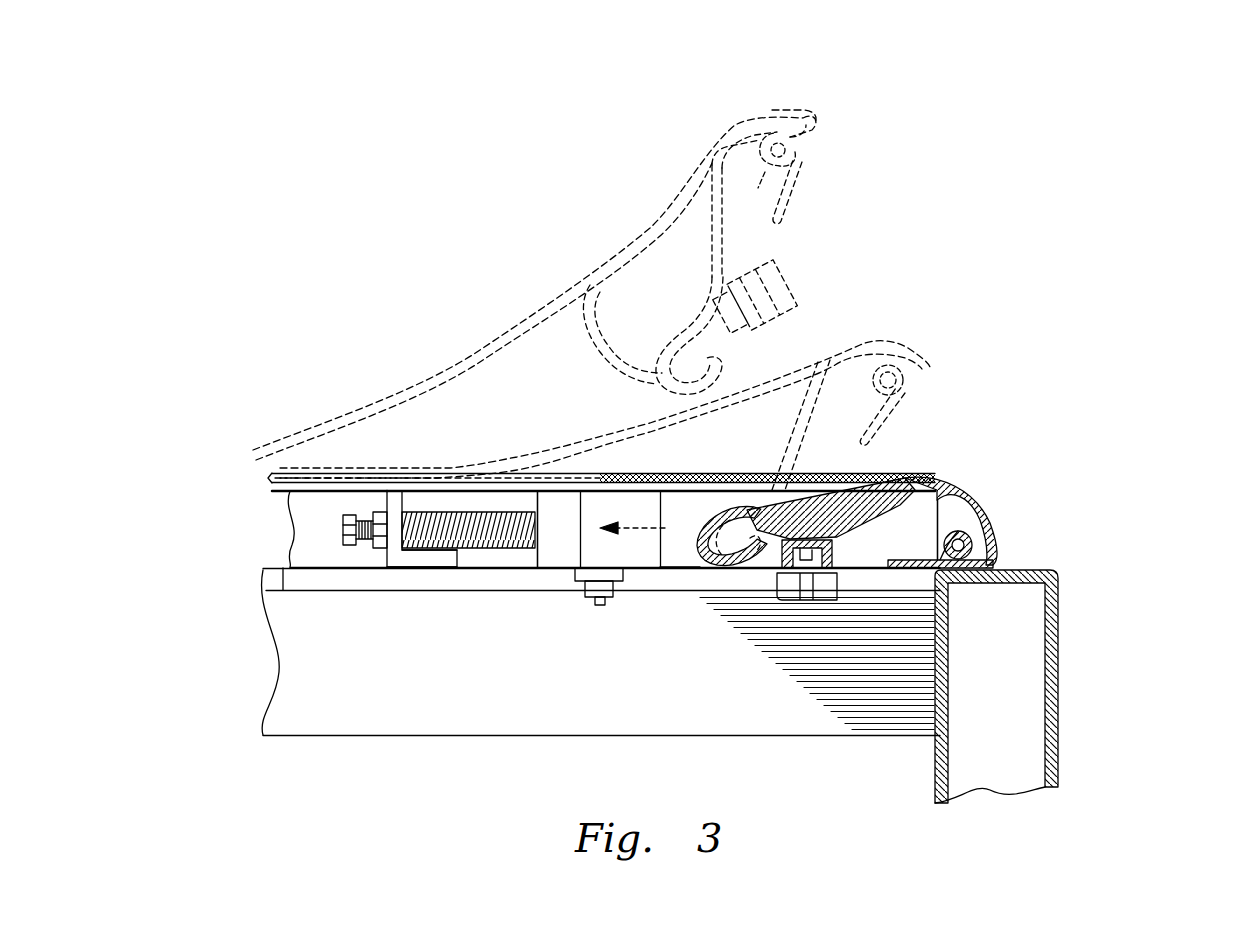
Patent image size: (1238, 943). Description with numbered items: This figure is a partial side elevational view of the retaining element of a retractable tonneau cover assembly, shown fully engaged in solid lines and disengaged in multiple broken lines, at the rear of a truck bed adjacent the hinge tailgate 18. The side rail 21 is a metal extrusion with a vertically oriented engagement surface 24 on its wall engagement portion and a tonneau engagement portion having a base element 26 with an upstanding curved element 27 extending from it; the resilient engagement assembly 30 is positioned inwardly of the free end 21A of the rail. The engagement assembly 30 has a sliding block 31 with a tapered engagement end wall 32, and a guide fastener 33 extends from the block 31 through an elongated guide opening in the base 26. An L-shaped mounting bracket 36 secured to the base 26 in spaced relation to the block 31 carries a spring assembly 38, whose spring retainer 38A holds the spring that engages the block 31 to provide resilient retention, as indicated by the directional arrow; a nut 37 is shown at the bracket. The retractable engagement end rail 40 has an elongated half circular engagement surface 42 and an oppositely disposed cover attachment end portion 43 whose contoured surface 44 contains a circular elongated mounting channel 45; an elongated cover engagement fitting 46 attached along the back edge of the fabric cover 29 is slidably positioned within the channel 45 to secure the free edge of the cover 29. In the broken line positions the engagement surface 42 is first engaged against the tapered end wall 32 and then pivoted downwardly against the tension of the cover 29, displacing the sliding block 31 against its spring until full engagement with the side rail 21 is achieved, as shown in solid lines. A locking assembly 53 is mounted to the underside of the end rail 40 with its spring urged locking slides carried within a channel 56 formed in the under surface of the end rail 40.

The hinge tailgate 18 is at (1075, 620).
The side rail 21 is at (957, 484).
The free end of side rail 21A is at (928, 515).
The vertically oriented engagement surface 24 is at (302, 686).
The base element 26 is at (278, 620).
The upstanding curved element 27 is at (313, 533).
The fabric cover 29 is at (537, 292).
The resilient engagement assembly 30 is at (546, 580).
The sliding block 31 is at (665, 530).
The tapered engagement end wall 32 is at (672, 537).
The guide fastener 33 is at (596, 594).
The L-shaped mounting bracket 36 is at (398, 569).
The nut 37 is at (336, 514).
The spring assembly 38 is at (448, 565).
The spring retainer 38A is at (437, 512).
The retractable engagement end rail 40 is at (710, 210).
The elongated engagement surface 42 is at (655, 372).
The cover attachment end portion 43 is at (736, 125).
The contoured surface 44 is at (745, 196).
The circular elongated mounting channel 45 is at (802, 162).
The elongated cover engagement fitting 46 is at (793, 140).
The locking assembly 53 is at (800, 297).
The channel 56 is at (808, 575).